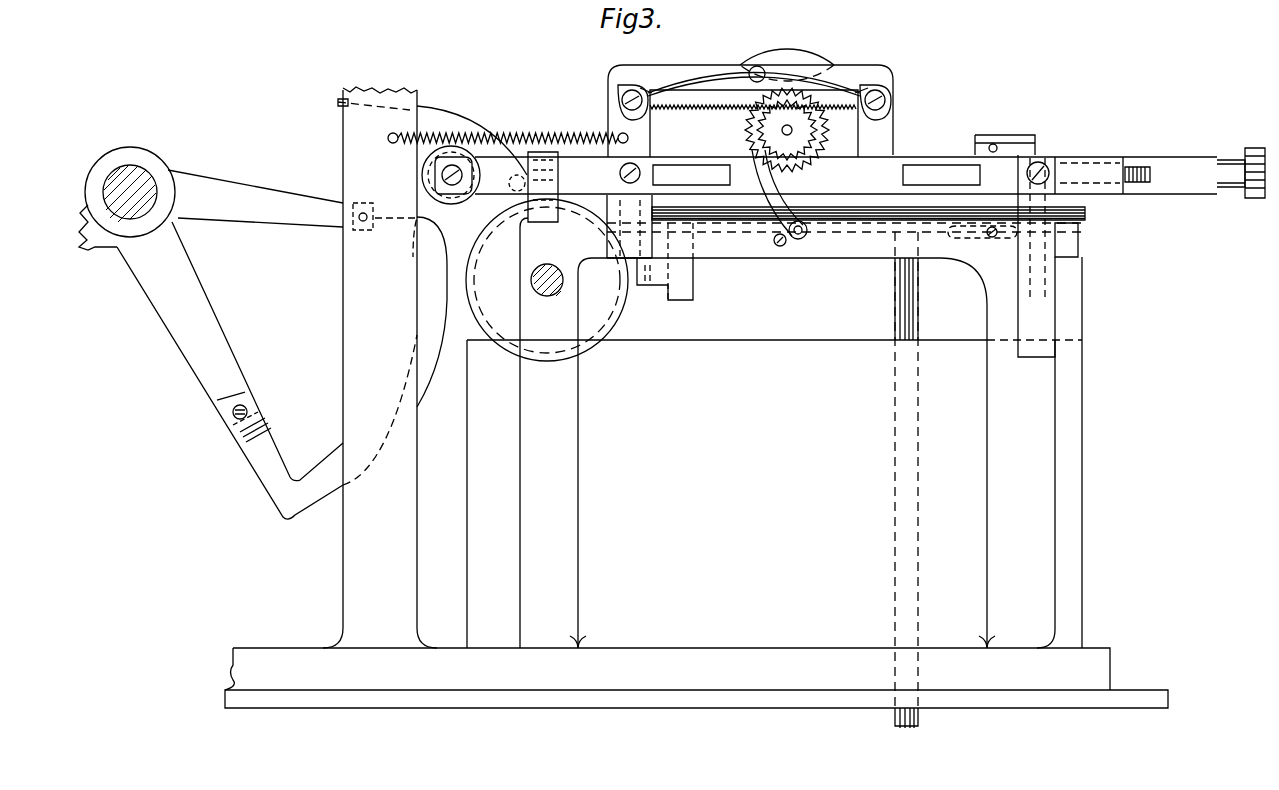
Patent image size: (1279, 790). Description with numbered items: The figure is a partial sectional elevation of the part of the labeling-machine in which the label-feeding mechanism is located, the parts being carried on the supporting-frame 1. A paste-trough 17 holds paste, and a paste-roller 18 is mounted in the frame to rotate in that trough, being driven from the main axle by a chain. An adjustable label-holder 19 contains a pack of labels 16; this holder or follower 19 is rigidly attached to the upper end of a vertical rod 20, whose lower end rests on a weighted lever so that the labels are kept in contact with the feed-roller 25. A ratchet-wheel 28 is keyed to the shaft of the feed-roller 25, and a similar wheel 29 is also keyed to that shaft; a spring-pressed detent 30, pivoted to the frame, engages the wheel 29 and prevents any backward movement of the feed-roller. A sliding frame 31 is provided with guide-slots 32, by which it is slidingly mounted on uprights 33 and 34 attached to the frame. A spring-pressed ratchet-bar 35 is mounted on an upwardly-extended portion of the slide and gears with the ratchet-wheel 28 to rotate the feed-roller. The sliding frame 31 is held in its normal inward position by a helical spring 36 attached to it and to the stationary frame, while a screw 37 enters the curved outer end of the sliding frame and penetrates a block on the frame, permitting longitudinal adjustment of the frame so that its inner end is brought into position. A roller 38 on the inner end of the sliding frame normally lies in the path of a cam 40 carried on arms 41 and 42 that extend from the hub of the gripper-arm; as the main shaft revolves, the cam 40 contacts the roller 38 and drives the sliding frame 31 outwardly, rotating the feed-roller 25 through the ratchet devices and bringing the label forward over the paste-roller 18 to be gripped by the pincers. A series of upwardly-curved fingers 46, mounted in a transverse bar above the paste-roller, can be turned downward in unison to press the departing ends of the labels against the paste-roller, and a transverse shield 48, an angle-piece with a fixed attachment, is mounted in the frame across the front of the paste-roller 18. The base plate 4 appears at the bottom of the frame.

The supporting-frame 1 is at (667, 377).
The base plate 4 is at (696, 683).
The labels 16 is at (858, 207).
The paste-trough 17 is at (782, 453).
The paste-roller 18 is at (547, 280).
The label-holder 19 is at (745, 226).
The vertical rod 20 is at (895, 297).
The feed-roller 25 is at (787, 141).
The ratchet-wheel 28 is at (757, 128).
The ratchet-wheel 29 is at (814, 132).
The spring-pressed detent 30 is at (764, 184).
The sliding frame 31 is at (850, 76).
The guide-slots 32 is at (816, 175).
The upright 33 is at (629, 226).
The upright 34 is at (1036, 256).
The spring-pressed ratchet-bar 35 is at (668, 102).
The helical spring 36 is at (521, 134).
The screw 37 is at (1136, 167).
The roller 38 is at (473, 197).
The cam 40 is at (395, 351).
The arm 41 is at (226, 198).
The arm 42 is at (230, 370).
The upwardly-curved fingers 46 is at (460, 118).
The transverse shield 48 is at (560, 185).